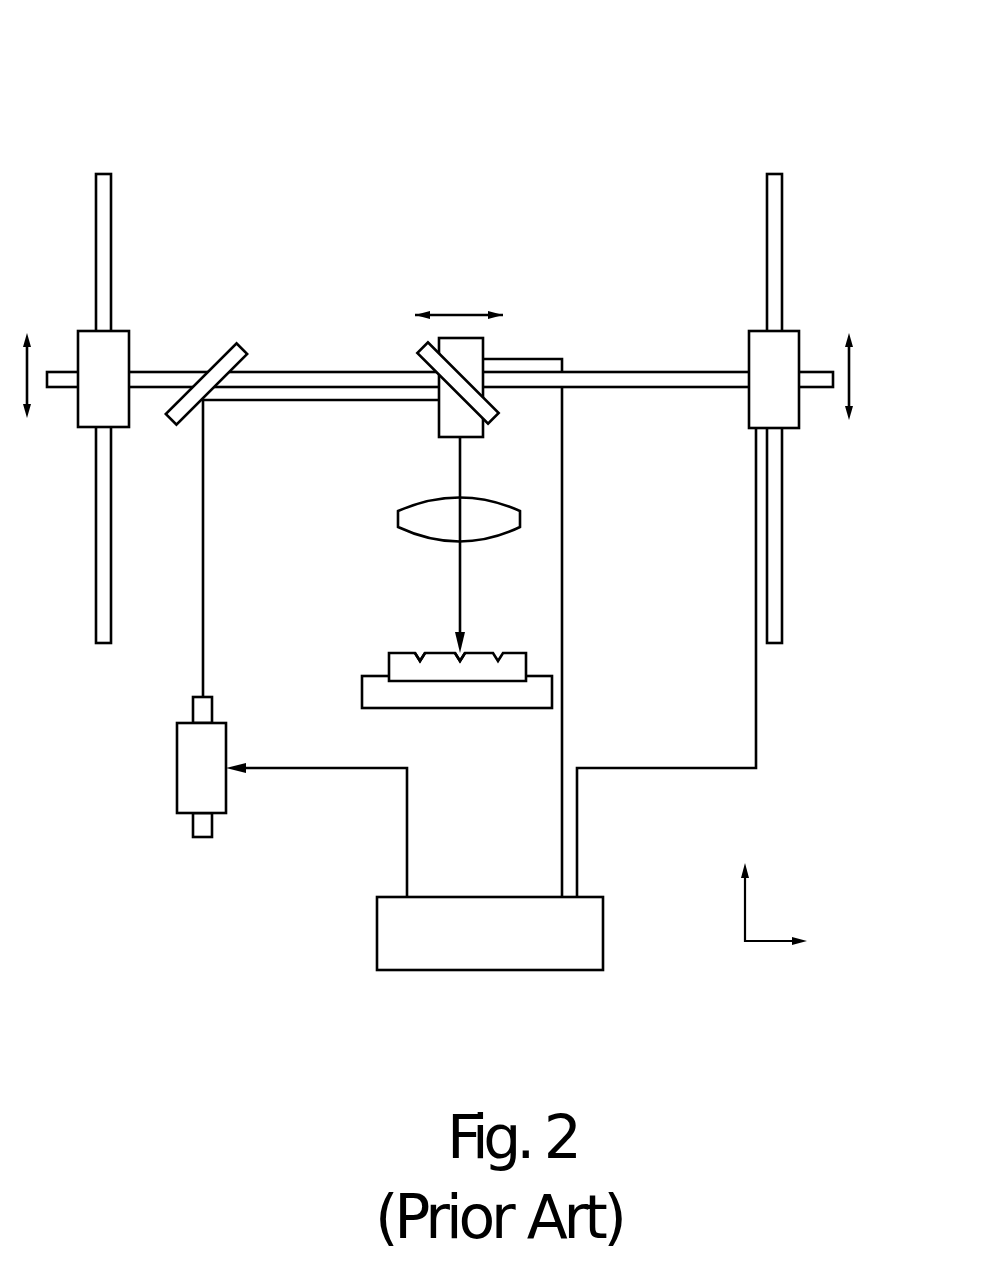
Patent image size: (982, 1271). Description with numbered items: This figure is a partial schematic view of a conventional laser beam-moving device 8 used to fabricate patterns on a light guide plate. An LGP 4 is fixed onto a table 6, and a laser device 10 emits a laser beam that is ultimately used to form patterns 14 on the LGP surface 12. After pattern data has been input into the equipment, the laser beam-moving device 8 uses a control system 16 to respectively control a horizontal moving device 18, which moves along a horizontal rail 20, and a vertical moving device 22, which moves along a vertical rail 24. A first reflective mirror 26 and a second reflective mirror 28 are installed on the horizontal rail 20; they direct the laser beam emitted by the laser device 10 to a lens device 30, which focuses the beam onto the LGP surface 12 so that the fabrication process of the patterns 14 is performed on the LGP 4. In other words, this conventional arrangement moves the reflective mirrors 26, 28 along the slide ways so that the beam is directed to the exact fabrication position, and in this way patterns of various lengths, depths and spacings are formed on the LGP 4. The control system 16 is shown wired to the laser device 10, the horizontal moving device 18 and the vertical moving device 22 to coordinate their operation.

The laser beam-moving device 8 is at (236, 115).
The LGP 4 is at (389, 662).
The table 6 is at (362, 694).
The laser device 10 is at (177, 781).
The LGP surface 12 is at (408, 652).
The patterns 14 is at (465, 650).
The control system 16 is at (603, 930).
The horizontal moving device 18 is at (483, 348).
The horizontal rail 20 is at (667, 372).
The vertical moving device 22 is at (799, 353).
The vertical rail 24 is at (782, 263).
The first reflective mirror 26 is at (227, 343).
The second reflective mirror 28 is at (418, 349).
The lens device 30 is at (398, 519).